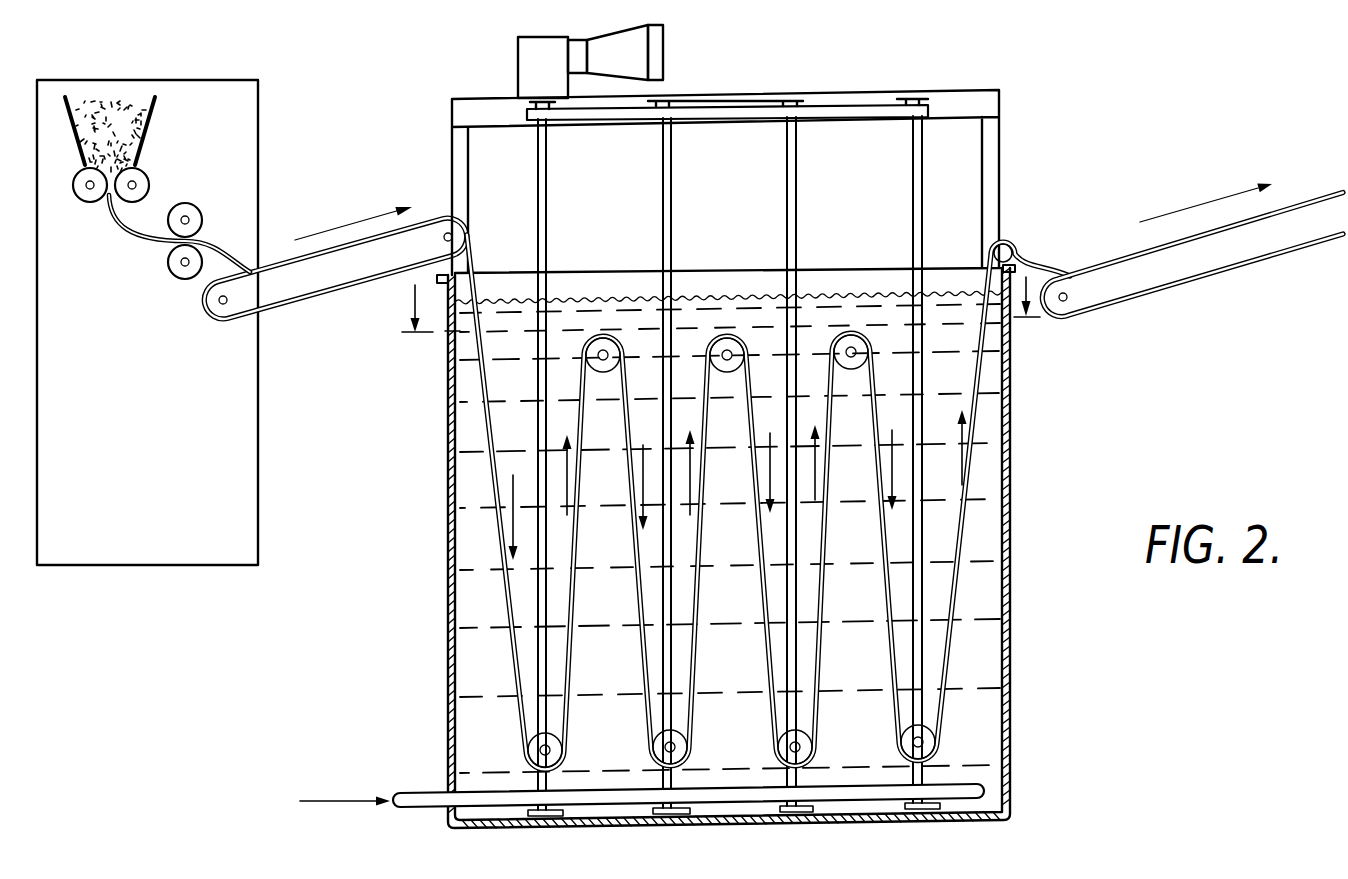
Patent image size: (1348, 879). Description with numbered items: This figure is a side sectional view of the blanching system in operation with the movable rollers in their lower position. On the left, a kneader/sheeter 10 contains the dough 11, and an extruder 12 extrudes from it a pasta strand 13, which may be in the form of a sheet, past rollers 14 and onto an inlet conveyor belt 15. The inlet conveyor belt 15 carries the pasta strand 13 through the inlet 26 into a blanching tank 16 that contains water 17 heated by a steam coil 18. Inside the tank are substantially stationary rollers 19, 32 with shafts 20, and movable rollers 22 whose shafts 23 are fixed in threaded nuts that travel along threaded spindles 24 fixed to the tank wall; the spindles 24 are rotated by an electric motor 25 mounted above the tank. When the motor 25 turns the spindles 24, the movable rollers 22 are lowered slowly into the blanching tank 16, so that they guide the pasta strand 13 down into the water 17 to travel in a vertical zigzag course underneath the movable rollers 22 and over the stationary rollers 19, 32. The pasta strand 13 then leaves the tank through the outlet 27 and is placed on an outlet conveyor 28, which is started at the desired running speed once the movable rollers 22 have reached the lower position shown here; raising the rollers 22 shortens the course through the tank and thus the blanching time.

The kneader/sheeter 10 is at (145, 132).
The dough 11 is at (105, 100).
The extruder 12 is at (105, 193).
The pasta strand 13 is at (130, 233).
The rollers 14 is at (185, 278).
The inlet conveyor belt 15 is at (292, 256).
The blanching tank 16 is at (448, 423).
The water 17 is at (472, 545).
The steam coil 18 is at (522, 797).
The stationary roller 19 is at (597, 347).
The shaft 20 is at (617, 350).
The movable roller 22 is at (533, 755).
The shaft 23 is at (537, 750).
The threaded spindle 24 is at (663, 193).
The electric motor 25 is at (518, 62).
The inlet 26 is at (435, 199).
The outlet 27 is at (1022, 227).
The outlet conveyor 28 is at (1203, 277).
The stationary roller 32 is at (738, 337).